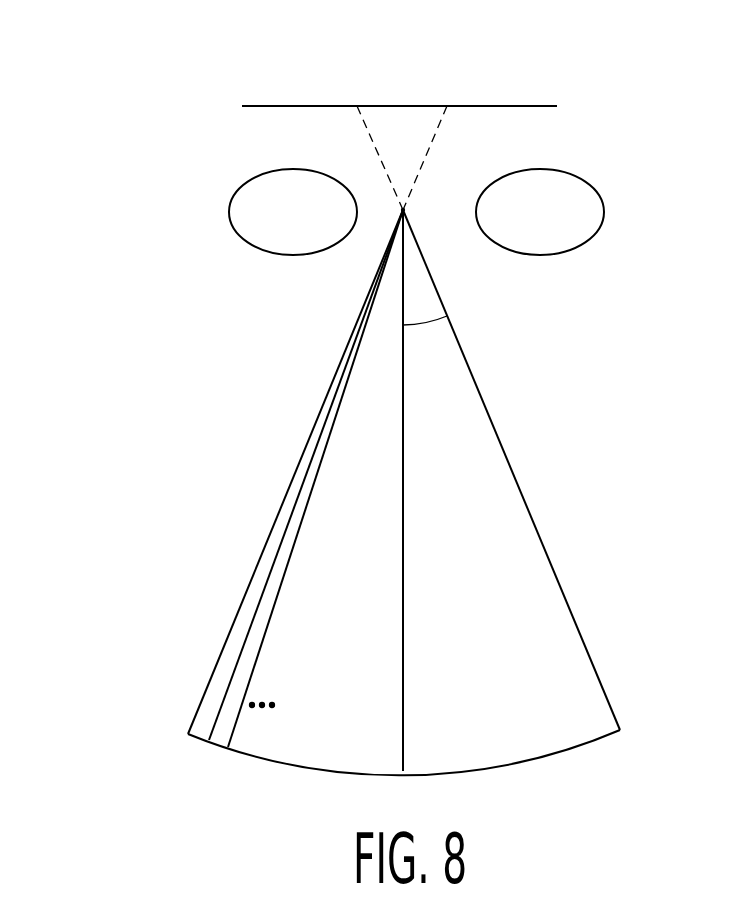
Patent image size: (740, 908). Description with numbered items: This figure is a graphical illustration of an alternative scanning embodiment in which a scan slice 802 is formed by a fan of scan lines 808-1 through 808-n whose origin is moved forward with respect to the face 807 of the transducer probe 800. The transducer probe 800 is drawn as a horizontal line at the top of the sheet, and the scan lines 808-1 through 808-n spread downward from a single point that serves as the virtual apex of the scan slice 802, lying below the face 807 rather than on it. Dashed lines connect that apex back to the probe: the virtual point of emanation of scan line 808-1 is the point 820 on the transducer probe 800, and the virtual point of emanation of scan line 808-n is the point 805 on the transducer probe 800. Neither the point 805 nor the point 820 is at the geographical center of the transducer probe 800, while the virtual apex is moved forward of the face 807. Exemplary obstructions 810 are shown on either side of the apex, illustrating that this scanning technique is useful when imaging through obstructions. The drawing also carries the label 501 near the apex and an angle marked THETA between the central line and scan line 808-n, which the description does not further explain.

The transducer probe 800 is at (122, 128).
The virtual point of emanation 805 is at (336, 90).
The virtual point of emanation 820 is at (455, 80).
The face of the transducer probe 807 is at (540, 107).
The focal point 501 is at (405, 205).
The obstructions 810 is at (315, 225).
The scan slice 802 is at (262, 457).
The scan line 808-1 is at (230, 637).
The scan line 808-n is at (582, 633).
The beam angle theta THETA is at (433, 333).